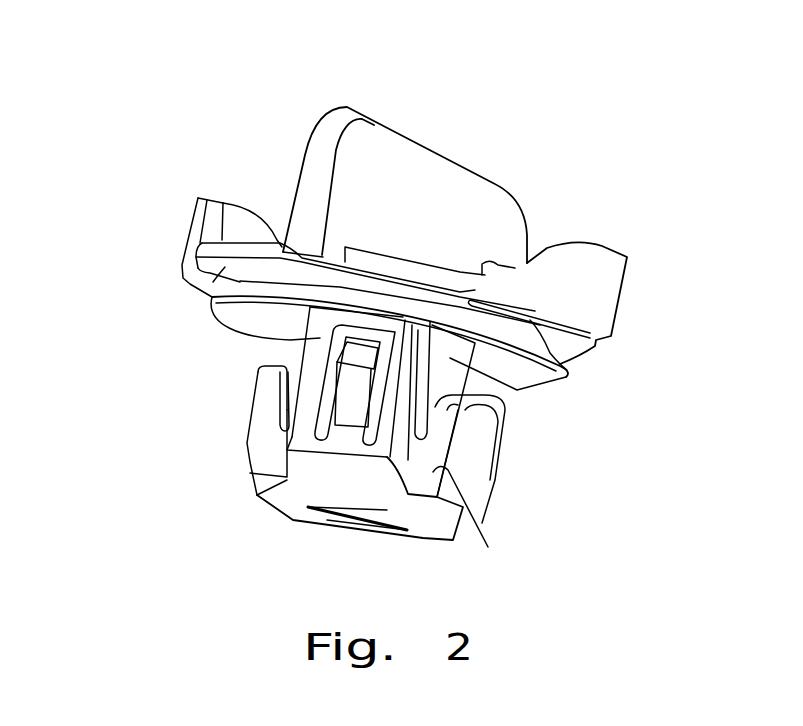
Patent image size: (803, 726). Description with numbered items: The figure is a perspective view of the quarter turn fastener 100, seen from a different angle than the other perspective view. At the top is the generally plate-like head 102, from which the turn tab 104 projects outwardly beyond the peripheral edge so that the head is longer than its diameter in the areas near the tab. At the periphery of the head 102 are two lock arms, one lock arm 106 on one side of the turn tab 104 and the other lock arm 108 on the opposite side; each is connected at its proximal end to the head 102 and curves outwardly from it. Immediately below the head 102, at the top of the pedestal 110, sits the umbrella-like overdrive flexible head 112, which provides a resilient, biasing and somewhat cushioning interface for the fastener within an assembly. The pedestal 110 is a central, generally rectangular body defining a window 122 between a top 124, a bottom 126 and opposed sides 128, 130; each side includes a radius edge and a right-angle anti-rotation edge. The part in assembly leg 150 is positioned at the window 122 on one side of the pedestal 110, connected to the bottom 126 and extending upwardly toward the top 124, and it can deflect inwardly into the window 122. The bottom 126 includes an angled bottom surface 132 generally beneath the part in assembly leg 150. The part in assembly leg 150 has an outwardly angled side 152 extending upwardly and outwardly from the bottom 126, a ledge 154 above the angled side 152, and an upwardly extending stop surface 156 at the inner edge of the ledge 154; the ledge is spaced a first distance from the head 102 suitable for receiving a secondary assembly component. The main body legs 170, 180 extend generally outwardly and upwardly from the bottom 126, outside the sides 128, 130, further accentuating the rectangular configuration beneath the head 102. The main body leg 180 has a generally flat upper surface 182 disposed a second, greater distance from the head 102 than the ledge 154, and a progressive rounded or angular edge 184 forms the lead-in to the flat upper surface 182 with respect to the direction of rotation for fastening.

The quarter turn fastener 100 is at (155, 184).
The head 102 is at (208, 287).
The turn tab 104 is at (473, 187).
The lock arm 106 is at (248, 190).
The lock arm 108 is at (500, 263).
The pedestal 110 is at (277, 539).
The overdrive flexible head 112 is at (570, 373).
The window 122 is at (300, 326).
The top 124 is at (366, 352).
The bottom 126 is at (327, 473).
The side 128 is at (312, 400).
The side 130 is at (517, 390).
The angled bottom surface 132 is at (347, 490).
The part in assembly leg 150 is at (415, 418).
The outwardly angled side 152 is at (348, 444).
The ledge 154 is at (485, 272).
The stop surface 156 is at (360, 362).
The main body leg 170 is at (263, 432).
The main body leg 180 is at (490, 548).
The flat upper surface 182 is at (283, 366).
The rounded or angular edge 184 is at (443, 430).